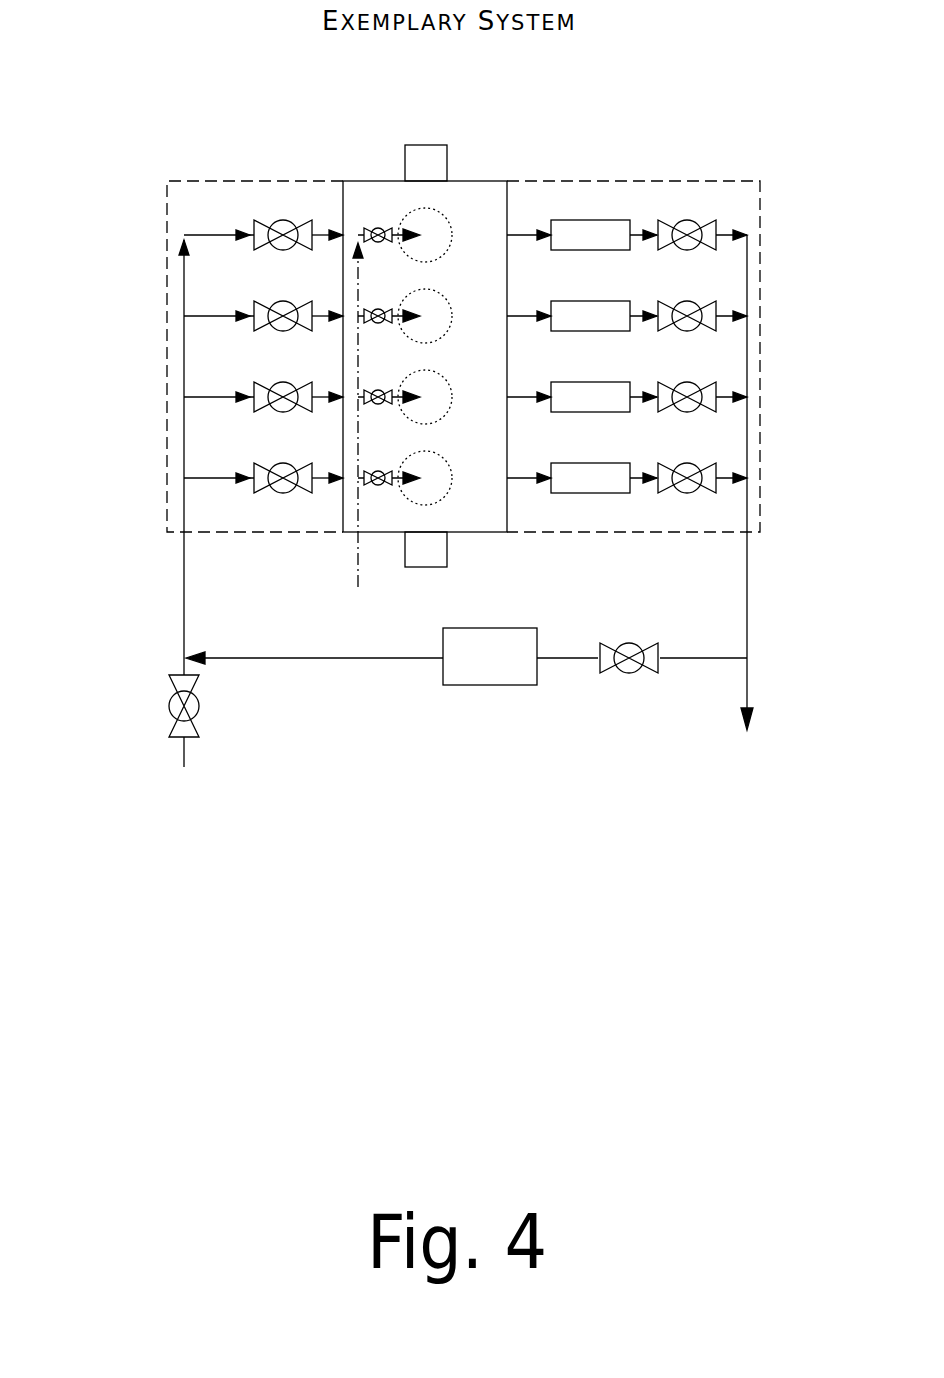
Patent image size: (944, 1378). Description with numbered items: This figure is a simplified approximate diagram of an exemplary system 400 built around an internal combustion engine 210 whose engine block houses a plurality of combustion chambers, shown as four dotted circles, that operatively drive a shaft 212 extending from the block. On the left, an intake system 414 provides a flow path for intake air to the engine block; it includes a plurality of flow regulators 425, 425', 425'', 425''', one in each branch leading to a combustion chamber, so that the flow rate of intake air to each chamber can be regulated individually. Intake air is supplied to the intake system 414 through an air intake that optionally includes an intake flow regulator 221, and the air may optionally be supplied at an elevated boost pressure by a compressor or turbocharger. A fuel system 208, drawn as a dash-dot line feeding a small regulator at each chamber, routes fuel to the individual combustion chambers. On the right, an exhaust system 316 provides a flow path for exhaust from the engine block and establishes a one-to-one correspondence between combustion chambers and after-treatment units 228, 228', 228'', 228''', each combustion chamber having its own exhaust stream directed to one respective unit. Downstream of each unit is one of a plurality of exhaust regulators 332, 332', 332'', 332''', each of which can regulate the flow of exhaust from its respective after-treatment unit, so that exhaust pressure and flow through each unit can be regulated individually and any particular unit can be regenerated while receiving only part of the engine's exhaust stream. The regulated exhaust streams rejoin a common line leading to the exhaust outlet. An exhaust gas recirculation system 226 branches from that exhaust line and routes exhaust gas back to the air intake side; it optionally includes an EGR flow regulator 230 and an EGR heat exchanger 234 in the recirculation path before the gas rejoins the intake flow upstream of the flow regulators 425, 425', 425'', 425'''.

The exemplary system 400 is at (603, 101).
The intake system 414 is at (218, 180).
The flow regulator 425 is at (263, 221).
The flow regulator 425' is at (263, 302).
The flow regulator 425'' is at (263, 383).
The flow regulator 425''' is at (263, 464).
The internal combustion engine 210 is at (382, 180).
The shaft 212 is at (427, 145).
The fuel system 208 is at (382, 647).
The exhaust system 316 is at (630, 180).
The after-treatment unit 228 is at (590, 235).
The after-treatment unit 228' is at (590, 316).
The after-treatment unit 228'' is at (590, 397).
The after-treatment unit 228''' is at (590, 478).
The exhaust regulator 332 is at (663, 221).
The exhaust regulator 332' is at (662, 302).
The exhaust regulator 332'' is at (661, 383).
The exhaust regulator 332''' is at (660, 464).
The exhaust gas recirculation (EGR) system 226 is at (382, 729).
The EGR flow regulator 230 is at (621, 647).
The EGR heat exchanger 234 is at (469, 669).
The intake flow regulator 221 is at (168, 700).